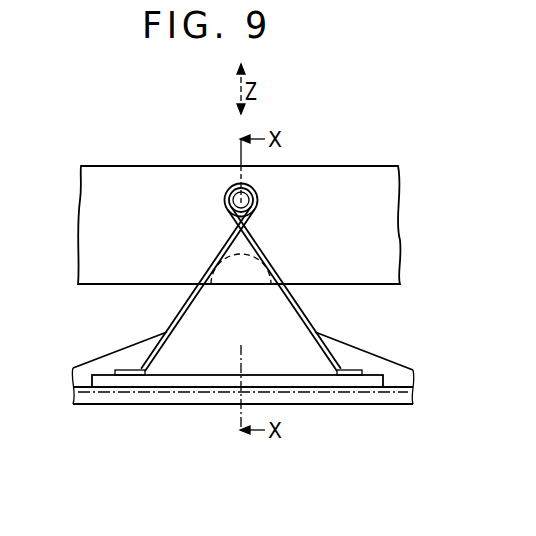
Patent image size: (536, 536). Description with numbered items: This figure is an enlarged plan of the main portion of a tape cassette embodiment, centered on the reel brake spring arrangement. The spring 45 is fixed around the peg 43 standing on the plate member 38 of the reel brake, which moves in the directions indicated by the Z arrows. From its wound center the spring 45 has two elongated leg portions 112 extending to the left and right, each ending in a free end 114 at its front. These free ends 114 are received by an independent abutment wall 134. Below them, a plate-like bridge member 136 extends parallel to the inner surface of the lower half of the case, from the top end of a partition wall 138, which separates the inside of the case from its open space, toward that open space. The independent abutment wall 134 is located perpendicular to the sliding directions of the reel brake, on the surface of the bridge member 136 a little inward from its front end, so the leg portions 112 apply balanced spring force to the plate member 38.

The plate member 38 is at (342, 178).
The peg 43 is at (237, 204).
The spring 45 is at (250, 278).
The leg portions 112 is at (211, 265).
The free ends 114 is at (358, 372).
The independent abutment wall 134 is at (307, 380).
The bridge member 136 is at (188, 365).
The partition wall 138 is at (147, 333).